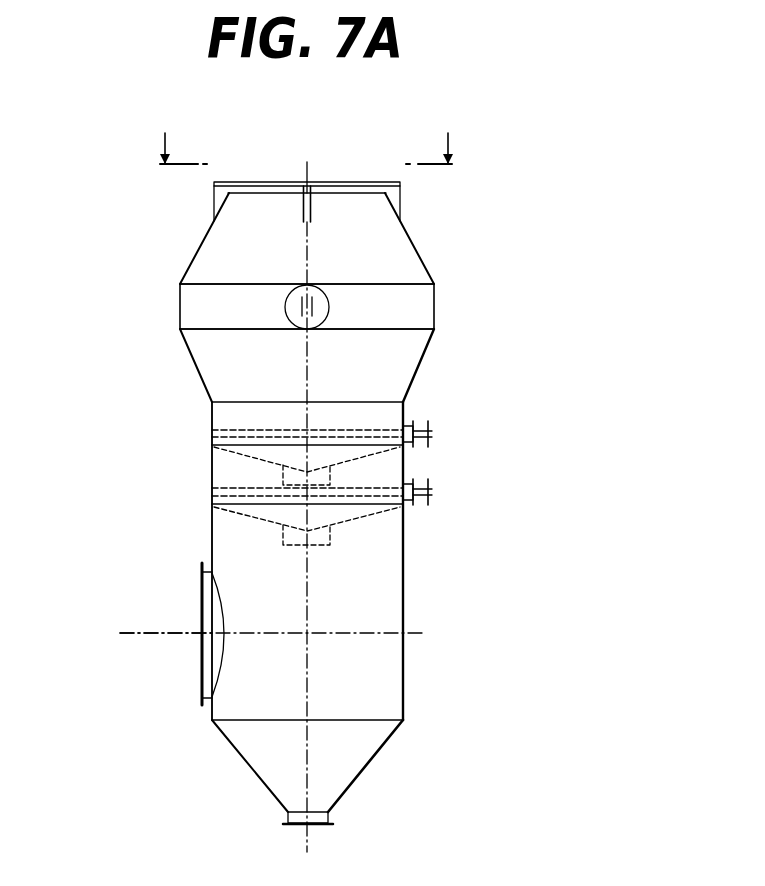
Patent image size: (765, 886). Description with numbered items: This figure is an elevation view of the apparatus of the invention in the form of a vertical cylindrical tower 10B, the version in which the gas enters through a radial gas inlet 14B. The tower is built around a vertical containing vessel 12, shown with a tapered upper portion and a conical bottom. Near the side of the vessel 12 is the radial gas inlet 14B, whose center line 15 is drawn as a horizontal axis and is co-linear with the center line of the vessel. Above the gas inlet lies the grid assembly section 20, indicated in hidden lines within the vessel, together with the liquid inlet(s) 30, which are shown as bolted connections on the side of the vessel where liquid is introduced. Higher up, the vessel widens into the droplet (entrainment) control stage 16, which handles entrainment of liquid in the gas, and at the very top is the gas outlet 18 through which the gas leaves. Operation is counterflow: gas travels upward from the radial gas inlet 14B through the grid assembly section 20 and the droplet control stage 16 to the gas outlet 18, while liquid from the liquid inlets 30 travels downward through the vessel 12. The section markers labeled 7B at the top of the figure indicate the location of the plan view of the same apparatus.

The vertical cylindrical tower 10B is at (524, 260).
The gas outlet 18 is at (326, 182).
The droplet control stage 16 is at (178, 298).
The section line 7B is at (307, 138).
The liquid inlet 30 is at (432, 433).
The grid assembly section 20 is at (253, 514).
The containing vessel 12 is at (212, 546).
The radial gas inlet 14B is at (200, 647).
The center line of the radial gas inlet 15 is at (129, 633).